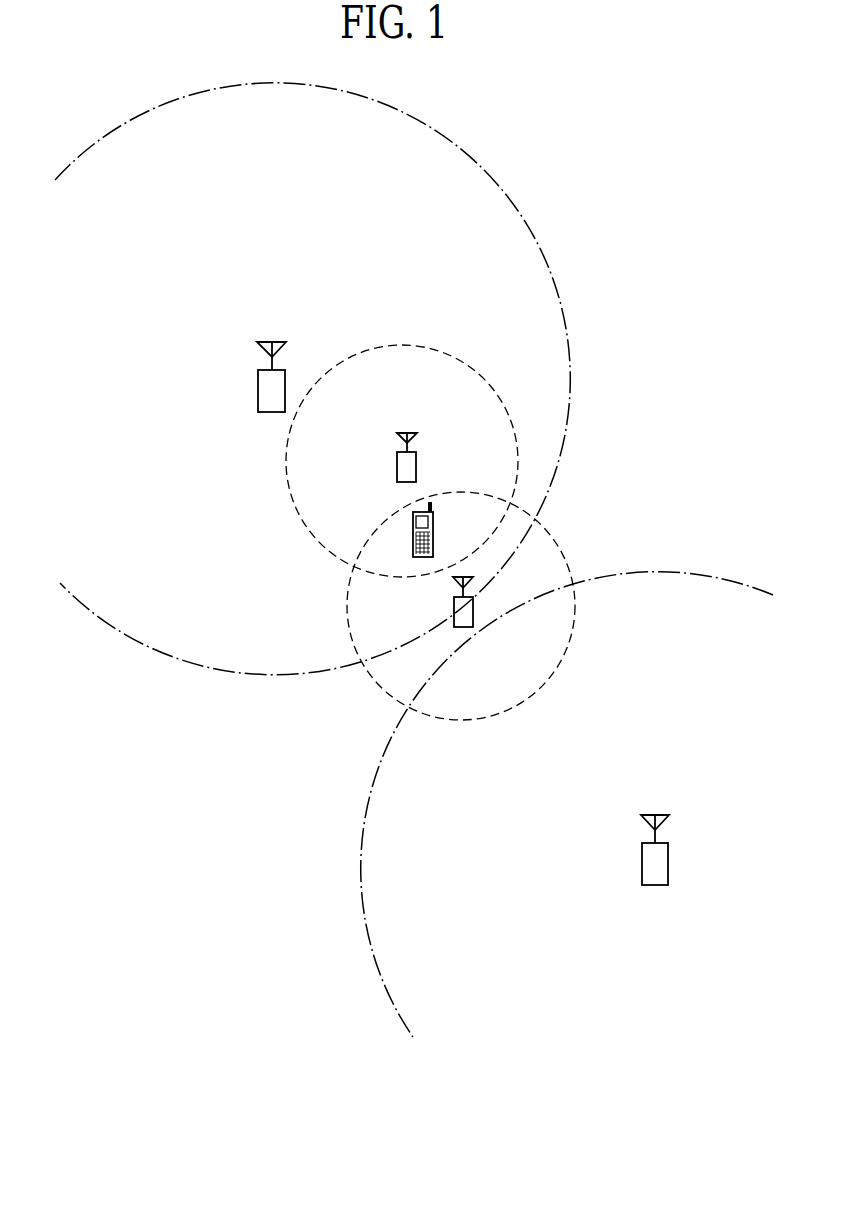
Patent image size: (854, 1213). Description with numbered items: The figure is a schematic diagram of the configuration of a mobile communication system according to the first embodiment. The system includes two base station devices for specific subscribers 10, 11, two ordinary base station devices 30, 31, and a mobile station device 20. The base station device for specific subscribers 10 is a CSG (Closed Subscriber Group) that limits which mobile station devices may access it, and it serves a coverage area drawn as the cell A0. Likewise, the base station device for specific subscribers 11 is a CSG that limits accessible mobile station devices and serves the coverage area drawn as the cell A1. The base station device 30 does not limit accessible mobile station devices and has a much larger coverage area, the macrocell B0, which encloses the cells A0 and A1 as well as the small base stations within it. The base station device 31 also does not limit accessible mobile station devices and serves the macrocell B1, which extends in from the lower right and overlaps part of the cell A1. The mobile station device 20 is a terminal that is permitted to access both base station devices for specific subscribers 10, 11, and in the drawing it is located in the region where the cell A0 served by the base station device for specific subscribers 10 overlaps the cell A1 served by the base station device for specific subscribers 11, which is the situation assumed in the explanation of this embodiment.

The base station device for specific subscribers 10 is at (417, 466).
The base station device for specific subscribers 11 is at (453, 608).
The mobile station device 20 is at (434, 526).
The base station device 30 is at (258, 393).
The base station device 31 is at (668, 862).
The cell A0 is at (405, 343).
The cell A1 is at (562, 548).
The macrocell B0 is at (569, 355).
The macrocell B1 is at (697, 572).